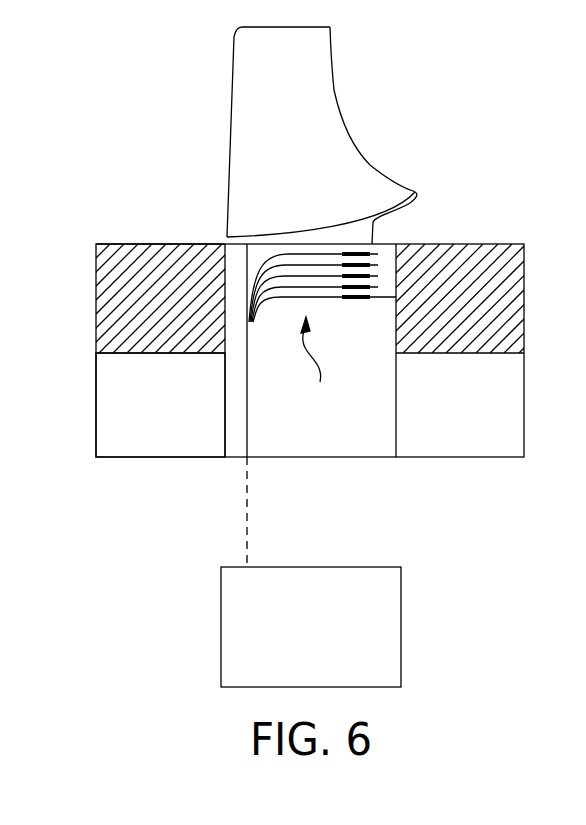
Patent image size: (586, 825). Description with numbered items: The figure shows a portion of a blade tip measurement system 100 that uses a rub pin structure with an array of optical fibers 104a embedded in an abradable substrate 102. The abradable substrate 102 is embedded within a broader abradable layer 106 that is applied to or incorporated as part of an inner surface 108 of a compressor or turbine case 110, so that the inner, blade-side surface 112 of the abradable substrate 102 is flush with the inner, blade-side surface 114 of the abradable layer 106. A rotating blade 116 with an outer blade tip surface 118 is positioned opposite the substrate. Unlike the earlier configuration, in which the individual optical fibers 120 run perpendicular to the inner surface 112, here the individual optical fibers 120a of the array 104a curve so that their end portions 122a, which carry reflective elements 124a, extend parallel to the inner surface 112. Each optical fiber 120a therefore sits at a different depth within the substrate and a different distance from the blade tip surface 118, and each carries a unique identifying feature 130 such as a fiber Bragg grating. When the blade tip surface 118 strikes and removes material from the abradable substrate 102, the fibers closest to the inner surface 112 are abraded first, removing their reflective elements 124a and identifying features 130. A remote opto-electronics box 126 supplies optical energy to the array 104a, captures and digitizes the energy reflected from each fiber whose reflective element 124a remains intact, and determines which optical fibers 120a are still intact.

The blade tip measurement system 100 is at (167, 149).
The abradable substrate 102 is at (372, 408).
The array of optical fibers 104a is at (321, 366).
The abradable layer 106 is at (127, 323).
The inner surface of the compressor or turbine case 108 is at (172, 355).
The compressor or turbine case 110 is at (121, 425).
The inner, blade-side surface of the abradable substrate 112 is at (398, 192).
The inner, blade-side surface of the abradable layer 114 is at (117, 244).
The rotating blade 116 is at (310, 88).
The outer blade tip surface 118 is at (302, 237).
The individual optical fibers 120 is at (247, 432).
The individual optical fibers 120a is at (272, 303).
The end portions 122a is at (332, 300).
The reflective elements 124a is at (396, 297).
The opto-electronics box 126 is at (294, 678).
The identifying feature 130 is at (357, 299).